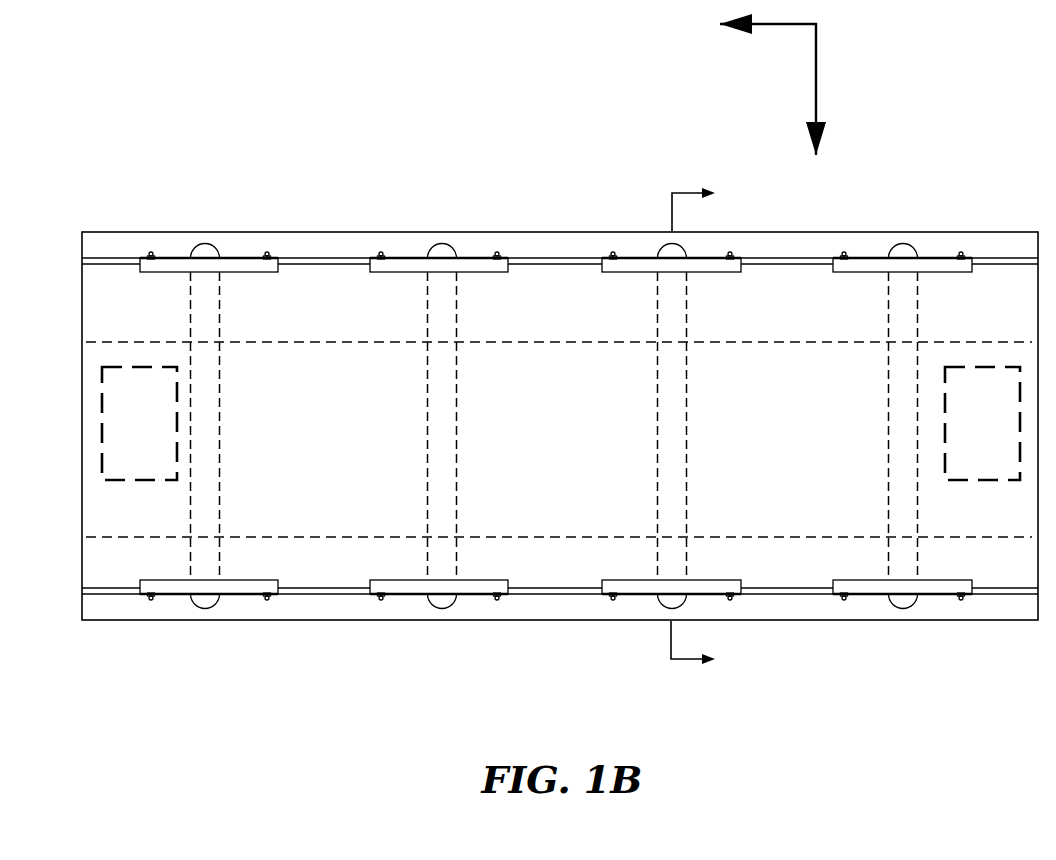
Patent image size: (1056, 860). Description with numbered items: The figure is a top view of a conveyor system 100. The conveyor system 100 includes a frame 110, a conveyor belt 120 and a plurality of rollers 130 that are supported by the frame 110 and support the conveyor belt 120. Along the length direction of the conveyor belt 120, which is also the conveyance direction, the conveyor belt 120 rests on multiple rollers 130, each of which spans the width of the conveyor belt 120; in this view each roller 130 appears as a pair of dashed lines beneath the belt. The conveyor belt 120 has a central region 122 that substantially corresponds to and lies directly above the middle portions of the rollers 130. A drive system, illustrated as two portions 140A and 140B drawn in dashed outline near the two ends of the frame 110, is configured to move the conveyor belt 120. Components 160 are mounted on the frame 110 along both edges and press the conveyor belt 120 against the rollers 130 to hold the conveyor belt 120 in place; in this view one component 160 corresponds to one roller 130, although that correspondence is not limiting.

The conveyor system 100 is at (527, 381).
The frame 110 is at (355, 622).
The conveyor belt 120 is at (335, 318).
The central region 122 is at (559, 439).
The rollers 130 is at (450, 297).
The drive system 140A is at (982, 423).
The drive system 140B is at (139, 423).
The components 160 is at (637, 260).